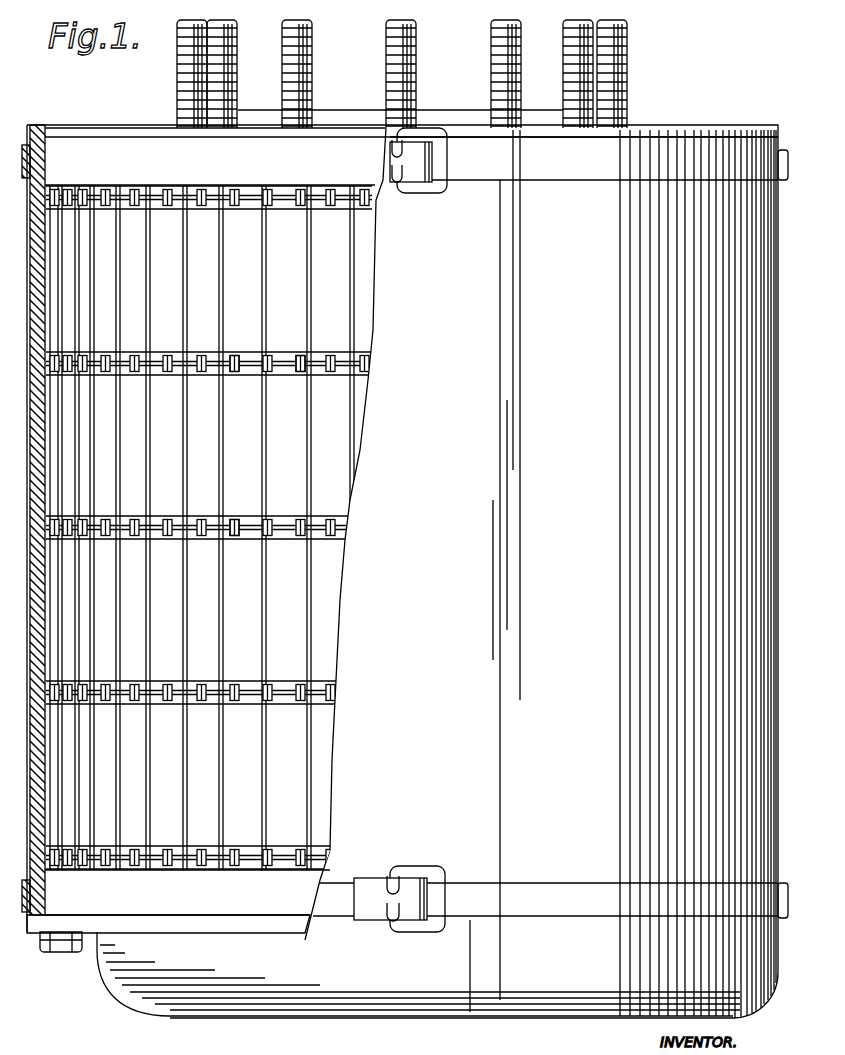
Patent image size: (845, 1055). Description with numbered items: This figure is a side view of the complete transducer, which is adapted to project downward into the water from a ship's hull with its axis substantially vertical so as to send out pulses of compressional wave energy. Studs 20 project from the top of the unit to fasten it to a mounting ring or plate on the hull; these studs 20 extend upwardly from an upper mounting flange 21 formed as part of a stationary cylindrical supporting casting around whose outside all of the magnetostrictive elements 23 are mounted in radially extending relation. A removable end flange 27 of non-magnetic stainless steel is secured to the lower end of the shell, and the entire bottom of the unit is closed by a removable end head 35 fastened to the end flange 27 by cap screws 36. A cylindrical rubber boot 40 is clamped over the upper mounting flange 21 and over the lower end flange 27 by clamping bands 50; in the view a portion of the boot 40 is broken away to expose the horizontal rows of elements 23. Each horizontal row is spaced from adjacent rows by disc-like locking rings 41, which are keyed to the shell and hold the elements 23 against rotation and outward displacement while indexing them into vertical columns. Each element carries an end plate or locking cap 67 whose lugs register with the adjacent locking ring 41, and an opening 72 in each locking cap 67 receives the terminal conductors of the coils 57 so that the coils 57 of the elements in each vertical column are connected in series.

The studs 20 is at (386, 70).
The upper mounting flange 21 is at (127, 152).
The magnetostrictive elements 23 is at (337, 262).
The removable end flange 27 is at (178, 901).
The removable end head 35 is at (206, 1000).
The cap screws 36 is at (64, 952).
The cylindrical rubber boot 40 is at (27, 205).
The locking rings 41 is at (362, 206).
The clamping bands 50 is at (37, 129).
The coils 57 is at (248, 542).
The locking cap 67 is at (297, 353).
The opening 72 is at (243, 353).